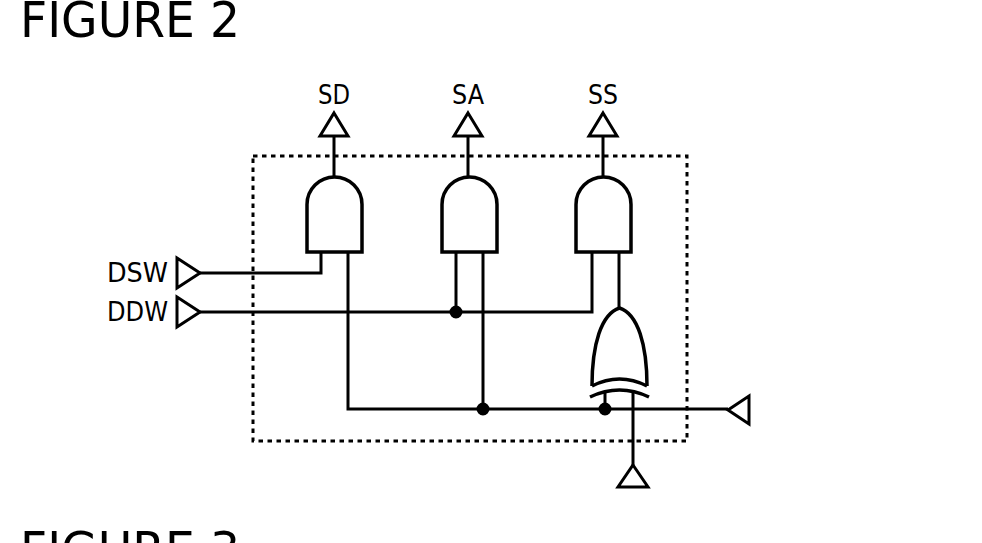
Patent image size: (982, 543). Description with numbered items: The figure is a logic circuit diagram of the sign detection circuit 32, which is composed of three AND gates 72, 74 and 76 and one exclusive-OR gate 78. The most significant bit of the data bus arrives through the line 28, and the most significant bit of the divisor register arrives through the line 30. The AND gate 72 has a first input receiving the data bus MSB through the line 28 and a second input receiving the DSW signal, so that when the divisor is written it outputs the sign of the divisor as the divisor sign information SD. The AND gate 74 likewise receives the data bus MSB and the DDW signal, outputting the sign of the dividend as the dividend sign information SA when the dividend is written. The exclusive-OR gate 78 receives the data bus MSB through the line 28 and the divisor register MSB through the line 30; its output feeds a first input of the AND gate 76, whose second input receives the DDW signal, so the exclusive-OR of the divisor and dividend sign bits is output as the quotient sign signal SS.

The sign detection circuit 32 is at (687, 222).
The AND gate 72 is at (362, 208).
The AND gate 74 is at (497, 208).
The AND gate 76 is at (631, 208).
The exclusive-OR gate 78 is at (647, 330).
The line 28 is at (703, 409).
The line 30 is at (633, 446).